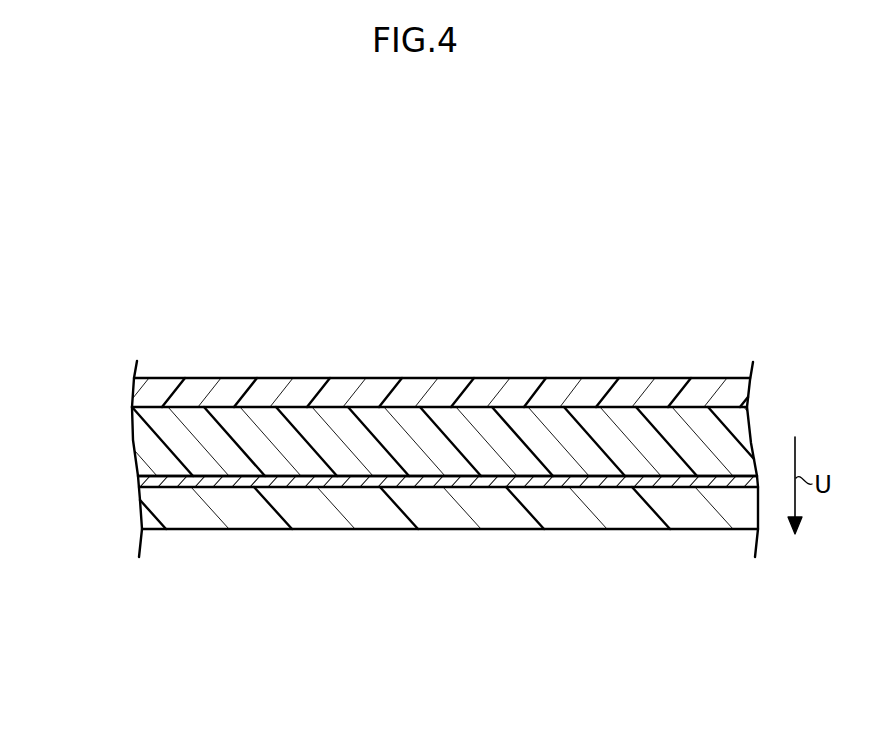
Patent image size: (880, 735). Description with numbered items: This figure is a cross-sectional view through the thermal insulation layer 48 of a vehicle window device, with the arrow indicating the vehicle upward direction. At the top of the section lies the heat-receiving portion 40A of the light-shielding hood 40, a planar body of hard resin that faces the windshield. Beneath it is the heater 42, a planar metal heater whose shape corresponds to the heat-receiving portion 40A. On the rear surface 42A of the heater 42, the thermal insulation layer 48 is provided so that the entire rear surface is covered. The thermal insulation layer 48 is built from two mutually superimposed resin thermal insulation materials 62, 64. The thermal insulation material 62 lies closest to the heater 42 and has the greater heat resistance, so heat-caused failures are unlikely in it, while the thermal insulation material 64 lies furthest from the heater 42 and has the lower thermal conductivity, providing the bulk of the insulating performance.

The light-shielding hood 40 is at (449, 545).
The heat-receiving portion 40A is at (322, 529).
The heater 42 is at (399, 473).
The rear surface of the heater 42A is at (173, 475).
The thermal insulation layer 48 is at (444, 375).
The thermal insulation material 62 is at (283, 316).
The thermal insulation material 64 is at (313, 386).